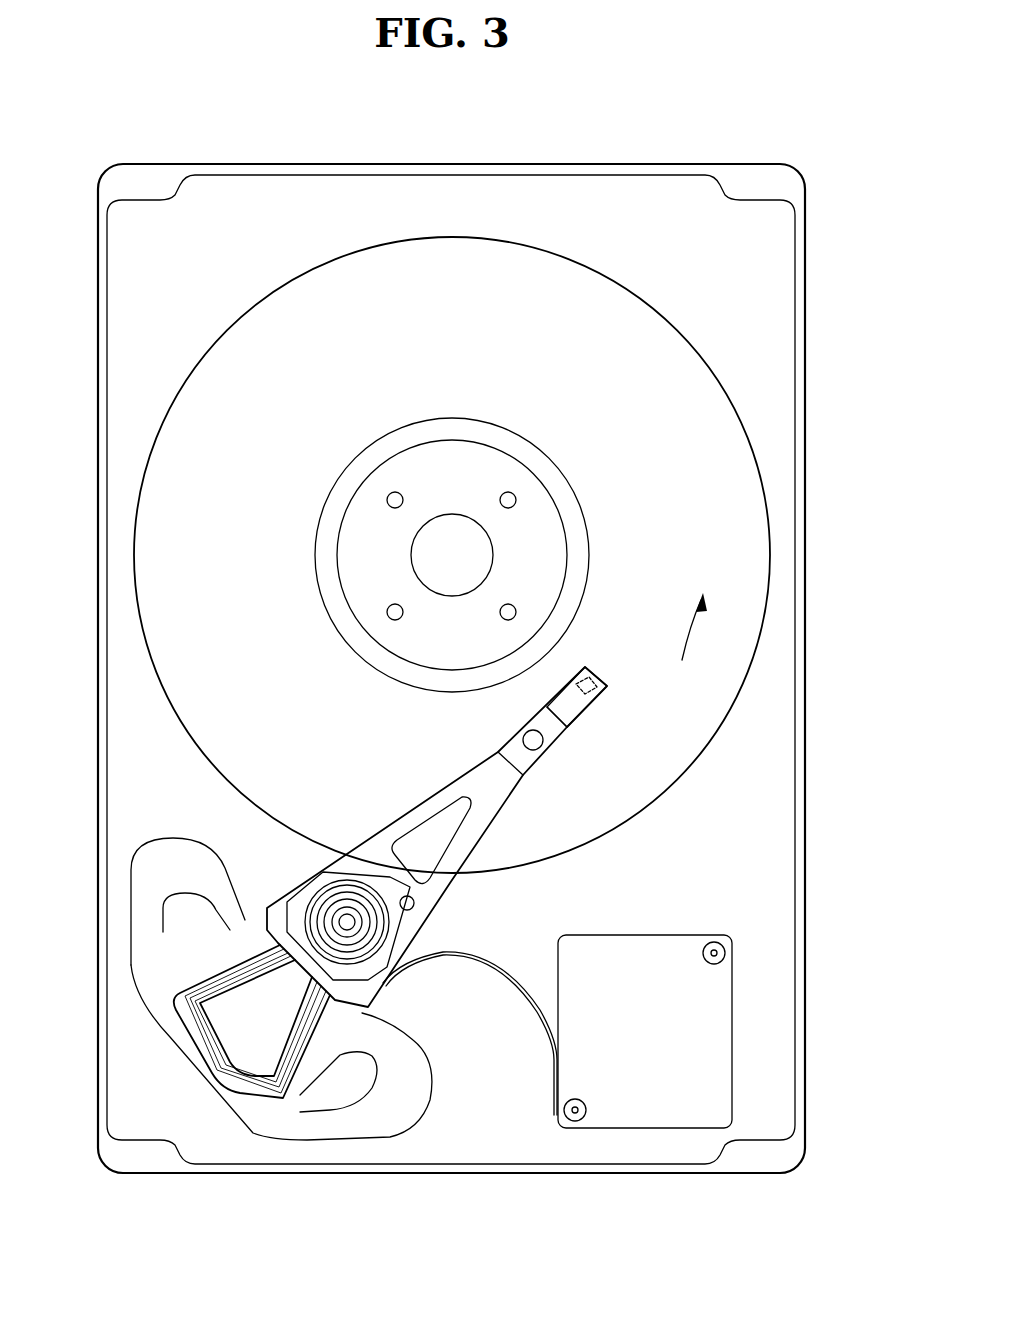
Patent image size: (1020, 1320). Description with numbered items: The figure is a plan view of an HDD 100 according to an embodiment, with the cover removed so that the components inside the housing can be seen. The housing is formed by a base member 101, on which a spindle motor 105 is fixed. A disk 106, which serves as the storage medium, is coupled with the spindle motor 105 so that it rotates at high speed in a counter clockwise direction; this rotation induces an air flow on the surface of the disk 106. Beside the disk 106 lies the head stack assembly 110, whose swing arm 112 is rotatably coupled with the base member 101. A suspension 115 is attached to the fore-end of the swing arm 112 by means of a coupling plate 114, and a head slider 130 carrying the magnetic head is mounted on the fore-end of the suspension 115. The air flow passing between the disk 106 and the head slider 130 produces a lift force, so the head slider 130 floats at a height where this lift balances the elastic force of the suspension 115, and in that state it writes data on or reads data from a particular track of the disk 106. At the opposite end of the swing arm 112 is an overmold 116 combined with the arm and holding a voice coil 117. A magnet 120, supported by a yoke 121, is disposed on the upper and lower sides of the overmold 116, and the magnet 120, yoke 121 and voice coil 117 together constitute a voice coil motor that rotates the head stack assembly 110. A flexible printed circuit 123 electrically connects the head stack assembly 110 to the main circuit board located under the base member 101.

The HDD 100 is at (828, 140).
The base member 101 is at (778, 320).
The spindle motor 105 is at (455, 455).
The disk 106 is at (765, 551).
The head stack assembly 110 is at (408, 925).
The swing arm 112 is at (410, 797).
The coupling plate 114 is at (537, 762).
The suspension 115 is at (573, 718).
The overmold 116 is at (300, 1062).
The voice coil 117 is at (263, 1085).
The magnet 120 is at (175, 928).
The yoke 121 is at (150, 1032).
The flexible printed circuit 123 is at (495, 970).
The head slider 130 is at (590, 677).